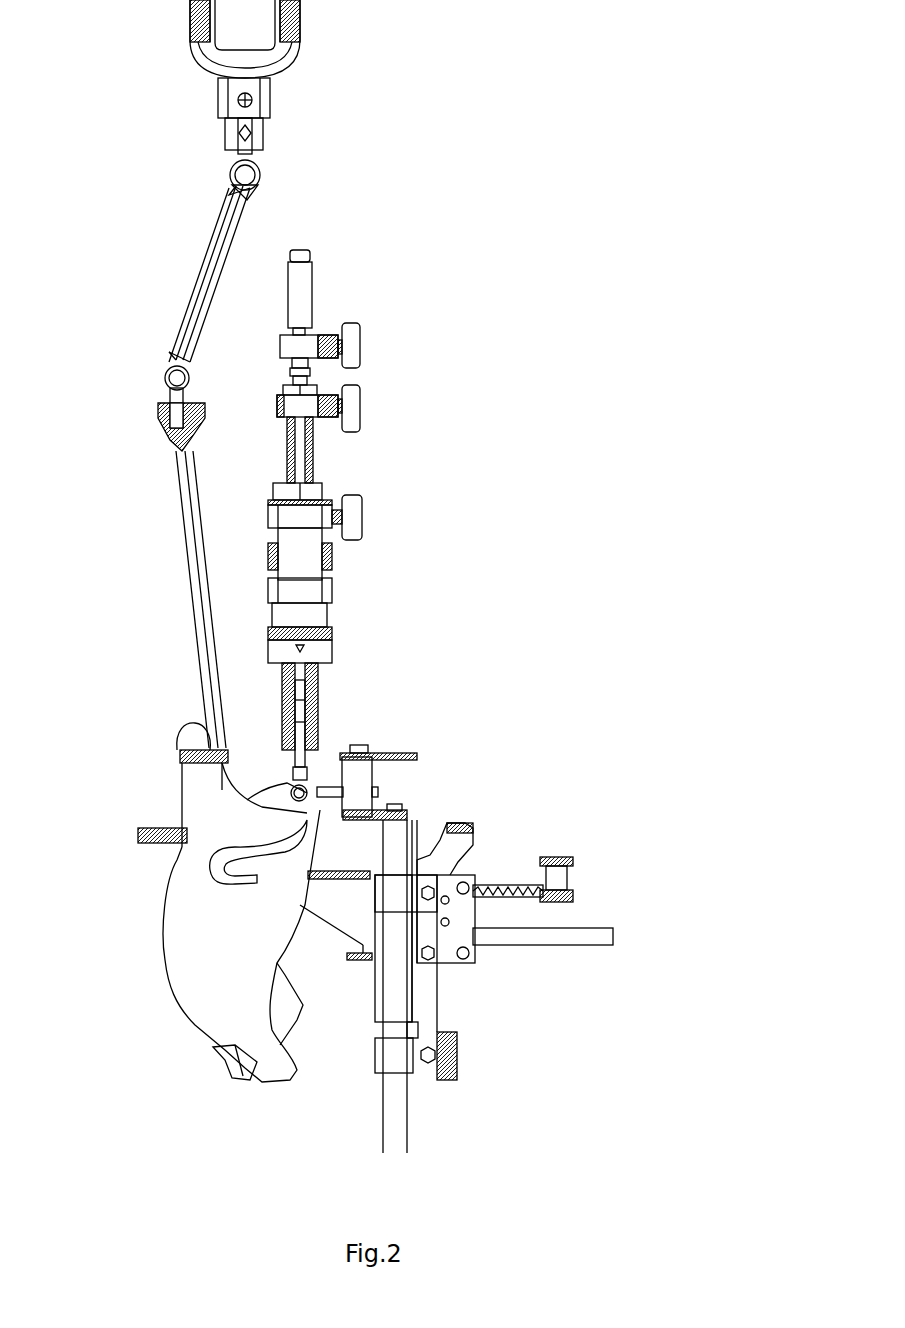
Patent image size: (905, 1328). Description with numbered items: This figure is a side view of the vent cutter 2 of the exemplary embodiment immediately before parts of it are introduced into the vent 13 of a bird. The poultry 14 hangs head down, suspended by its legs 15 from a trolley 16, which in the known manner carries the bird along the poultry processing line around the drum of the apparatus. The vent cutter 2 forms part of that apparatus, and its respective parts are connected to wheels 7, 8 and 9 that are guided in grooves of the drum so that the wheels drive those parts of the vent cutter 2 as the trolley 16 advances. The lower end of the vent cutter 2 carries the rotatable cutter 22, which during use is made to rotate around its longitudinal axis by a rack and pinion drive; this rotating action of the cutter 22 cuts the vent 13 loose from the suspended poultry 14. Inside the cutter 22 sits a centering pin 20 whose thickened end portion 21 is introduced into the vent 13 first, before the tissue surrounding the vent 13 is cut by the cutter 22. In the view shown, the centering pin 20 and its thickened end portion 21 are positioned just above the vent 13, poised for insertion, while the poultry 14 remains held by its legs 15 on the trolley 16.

The vent cutter 2 is at (335, 701).
The wheel 7 is at (364, 348).
The wheel 8 is at (364, 410).
The wheel 9 is at (364, 518).
The vent 13 is at (304, 826).
The poultry 14 is at (220, 922).
The legs 15 is at (178, 783).
The trolley 16 is at (288, 110).
The centering pin 20 is at (308, 777).
The thickened end portion 21 is at (289, 793).
The cutter 22 is at (321, 738).